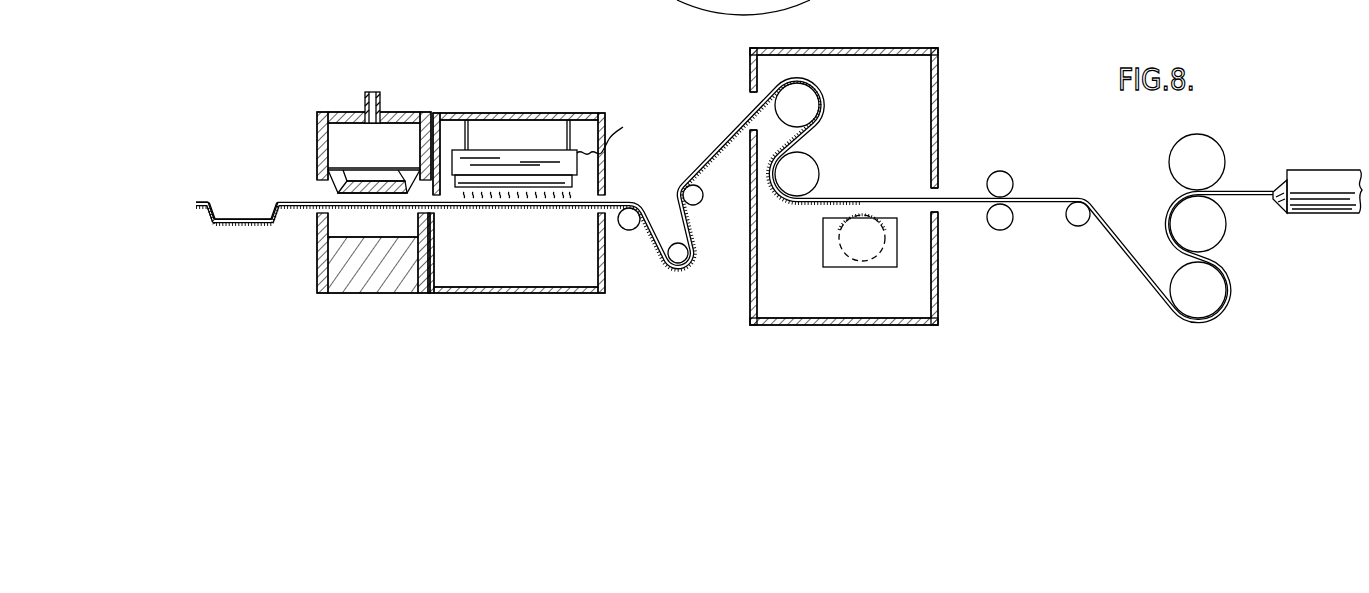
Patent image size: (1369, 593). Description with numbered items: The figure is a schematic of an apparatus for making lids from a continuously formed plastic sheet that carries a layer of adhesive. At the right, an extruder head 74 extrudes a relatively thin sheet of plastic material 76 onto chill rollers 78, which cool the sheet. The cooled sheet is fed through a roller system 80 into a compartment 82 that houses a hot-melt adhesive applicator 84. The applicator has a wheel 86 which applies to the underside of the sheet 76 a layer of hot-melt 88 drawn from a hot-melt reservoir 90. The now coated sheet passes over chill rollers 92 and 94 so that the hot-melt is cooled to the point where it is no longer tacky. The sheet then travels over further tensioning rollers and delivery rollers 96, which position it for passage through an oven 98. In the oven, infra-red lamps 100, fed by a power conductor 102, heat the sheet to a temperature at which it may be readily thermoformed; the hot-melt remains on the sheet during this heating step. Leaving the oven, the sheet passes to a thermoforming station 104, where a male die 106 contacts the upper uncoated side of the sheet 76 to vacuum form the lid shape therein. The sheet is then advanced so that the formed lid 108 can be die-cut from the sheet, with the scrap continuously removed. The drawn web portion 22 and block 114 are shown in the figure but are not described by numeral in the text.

The web strip 22 is at (196, 204).
The extruder head 74 is at (1322, 170).
The sheet of plastic material 76 is at (410, 210).
The chill rollers 78 is at (1233, 254).
The roller system 80 is at (1048, 167).
The compartment 82 is at (954, 74).
The hot-melt adhesive applicator 84 is at (839, 266).
The wheel 86 is at (840, 225).
The layer of hot-melt 88 is at (510, 208).
The hot-melt reservoir 90 is at (833, 260).
The chill roller 92 is at (798, 173).
The chill roller 94 is at (802, 97).
The delivery rollers 96 is at (677, 285).
The oven 98 is at (519, 109).
The infra-red lamps 100 is at (540, 157).
The power conductor 102 is at (621, 134).
The thermoforming station 104 is at (364, 112).
The male die 106 is at (327, 177).
The formed lid 108 is at (233, 229).
The die block 114 is at (337, 265).